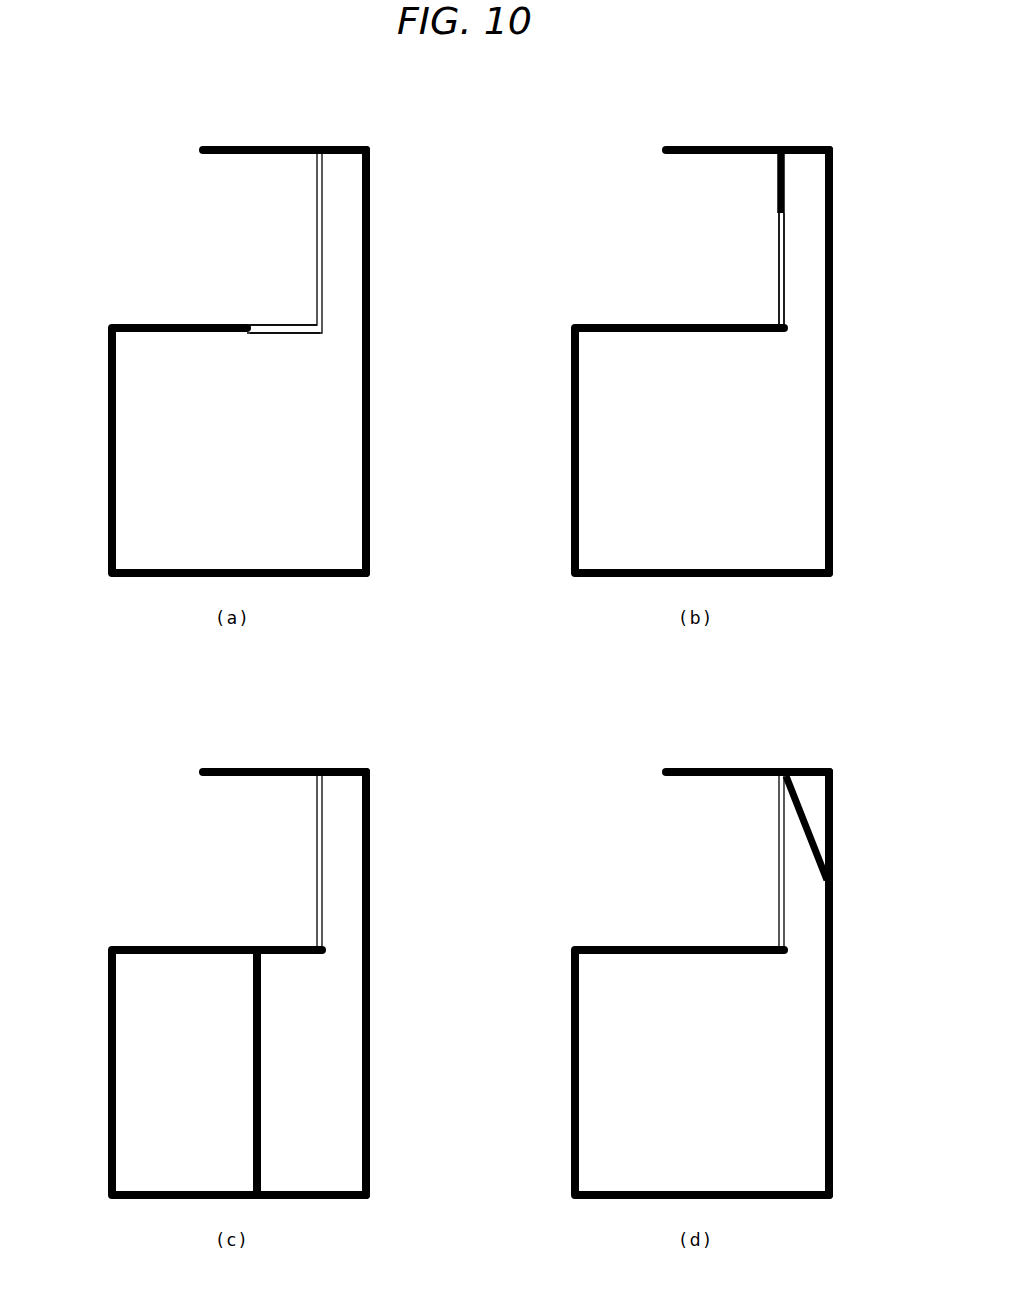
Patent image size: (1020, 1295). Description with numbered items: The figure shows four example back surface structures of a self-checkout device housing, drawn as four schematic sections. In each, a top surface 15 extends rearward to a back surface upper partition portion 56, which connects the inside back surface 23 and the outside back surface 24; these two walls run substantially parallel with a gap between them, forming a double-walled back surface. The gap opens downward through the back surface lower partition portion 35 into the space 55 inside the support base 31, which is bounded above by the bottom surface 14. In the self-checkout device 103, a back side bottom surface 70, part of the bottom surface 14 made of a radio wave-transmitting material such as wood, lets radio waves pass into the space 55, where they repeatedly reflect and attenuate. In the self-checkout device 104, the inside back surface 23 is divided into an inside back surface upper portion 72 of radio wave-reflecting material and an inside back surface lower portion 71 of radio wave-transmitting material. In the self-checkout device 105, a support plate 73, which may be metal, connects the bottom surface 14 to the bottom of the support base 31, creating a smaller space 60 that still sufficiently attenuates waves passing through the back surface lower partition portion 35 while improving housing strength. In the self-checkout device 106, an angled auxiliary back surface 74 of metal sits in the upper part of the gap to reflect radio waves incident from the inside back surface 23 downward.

The bottom surface 14 is at (146, 326).
The top plate 15 is at (278, 148).
The inside back surface 23 is at (316, 193).
The outside back surface 24 is at (372, 184).
The support base 31 is at (100, 470).
The back surface lower partition portion 35 is at (348, 345).
The space 55 is at (292, 474).
The back surface upper partition portion 56 is at (362, 143).
The space 60 is at (338, 1065).
The back side bottom surface 70 is at (282, 324).
The inside back surface lower portion 71 is at (777, 247).
The inside back surface upper portion 72 is at (777, 193).
The support plate 73 is at (260, 1112).
The auxiliary back surface 74 is at (803, 806).
The self-checkout device 103 is at (336, 116).
The self-checkout device 104 is at (799, 116).
The self-checkout device 105 is at (336, 738).
The self-checkout device 106 is at (799, 738).